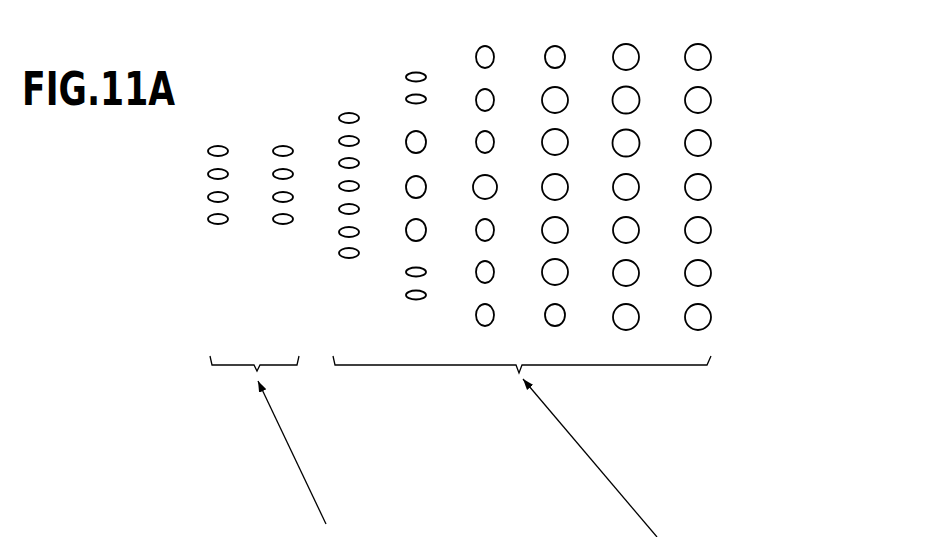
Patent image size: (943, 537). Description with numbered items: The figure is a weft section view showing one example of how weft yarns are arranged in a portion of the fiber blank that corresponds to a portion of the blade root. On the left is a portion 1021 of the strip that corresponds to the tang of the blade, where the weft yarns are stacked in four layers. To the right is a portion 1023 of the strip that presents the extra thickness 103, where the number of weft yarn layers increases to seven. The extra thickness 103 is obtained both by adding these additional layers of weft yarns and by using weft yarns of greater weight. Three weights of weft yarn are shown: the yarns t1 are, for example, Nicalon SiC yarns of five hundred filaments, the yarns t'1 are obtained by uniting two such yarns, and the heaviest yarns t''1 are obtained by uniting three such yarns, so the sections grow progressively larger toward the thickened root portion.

The portion of the strip corresponding to the tang of the blade 1021 is at (234, 197).
The portion of the strip presenting the extra thickness 1023 is at (574, 167).
The extra thickness 103 is at (590, 142).
The weft yarns t1 is at (222, 127).
The weft yarns t'1 is at (398, 243).
The weft yarns t''1 is at (723, 179).